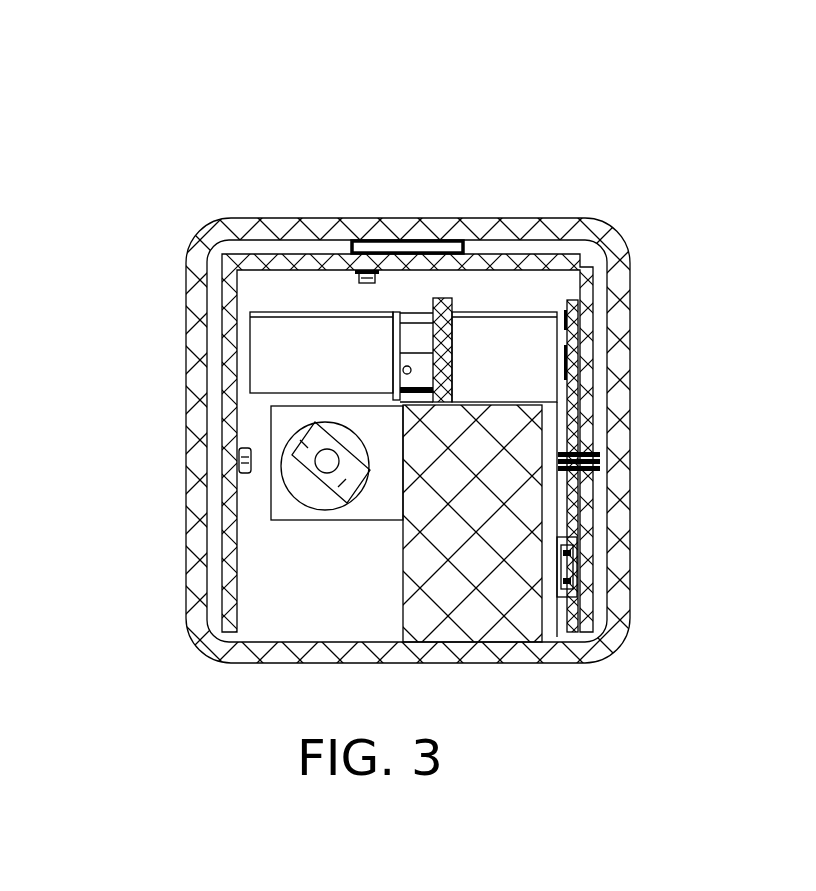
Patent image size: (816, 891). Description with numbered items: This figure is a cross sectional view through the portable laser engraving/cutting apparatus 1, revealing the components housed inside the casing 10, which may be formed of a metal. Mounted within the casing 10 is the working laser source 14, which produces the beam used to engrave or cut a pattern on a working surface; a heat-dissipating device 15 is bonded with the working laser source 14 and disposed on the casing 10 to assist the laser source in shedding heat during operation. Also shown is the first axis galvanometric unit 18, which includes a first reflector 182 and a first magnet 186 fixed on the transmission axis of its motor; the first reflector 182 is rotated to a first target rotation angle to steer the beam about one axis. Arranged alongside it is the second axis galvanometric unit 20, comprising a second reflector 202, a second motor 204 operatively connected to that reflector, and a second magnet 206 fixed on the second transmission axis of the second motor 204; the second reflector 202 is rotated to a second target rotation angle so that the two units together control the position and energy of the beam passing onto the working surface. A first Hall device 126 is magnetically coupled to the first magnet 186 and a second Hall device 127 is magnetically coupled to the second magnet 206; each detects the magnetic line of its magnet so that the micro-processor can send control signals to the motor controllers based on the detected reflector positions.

The portable laser engraving/cutting apparatus 1 is at (350, 100).
The casing 10 is at (470, 650).
The working laser source 14 is at (582, 468).
The heat-dissipating device 15 is at (550, 437).
The first axis galvanometric unit 18 is at (118, 527).
The first reflector 182 is at (283, 460).
The first magnet 186 is at (310, 490).
The second axis galvanometric unit 20 is at (523, 162).
The second reflector 202 is at (305, 340).
The second motor 204 is at (497, 357).
The second magnet 206 is at (417, 337).
The first Hall device 126 is at (238, 453).
The second Hall device 127 is at (357, 278).